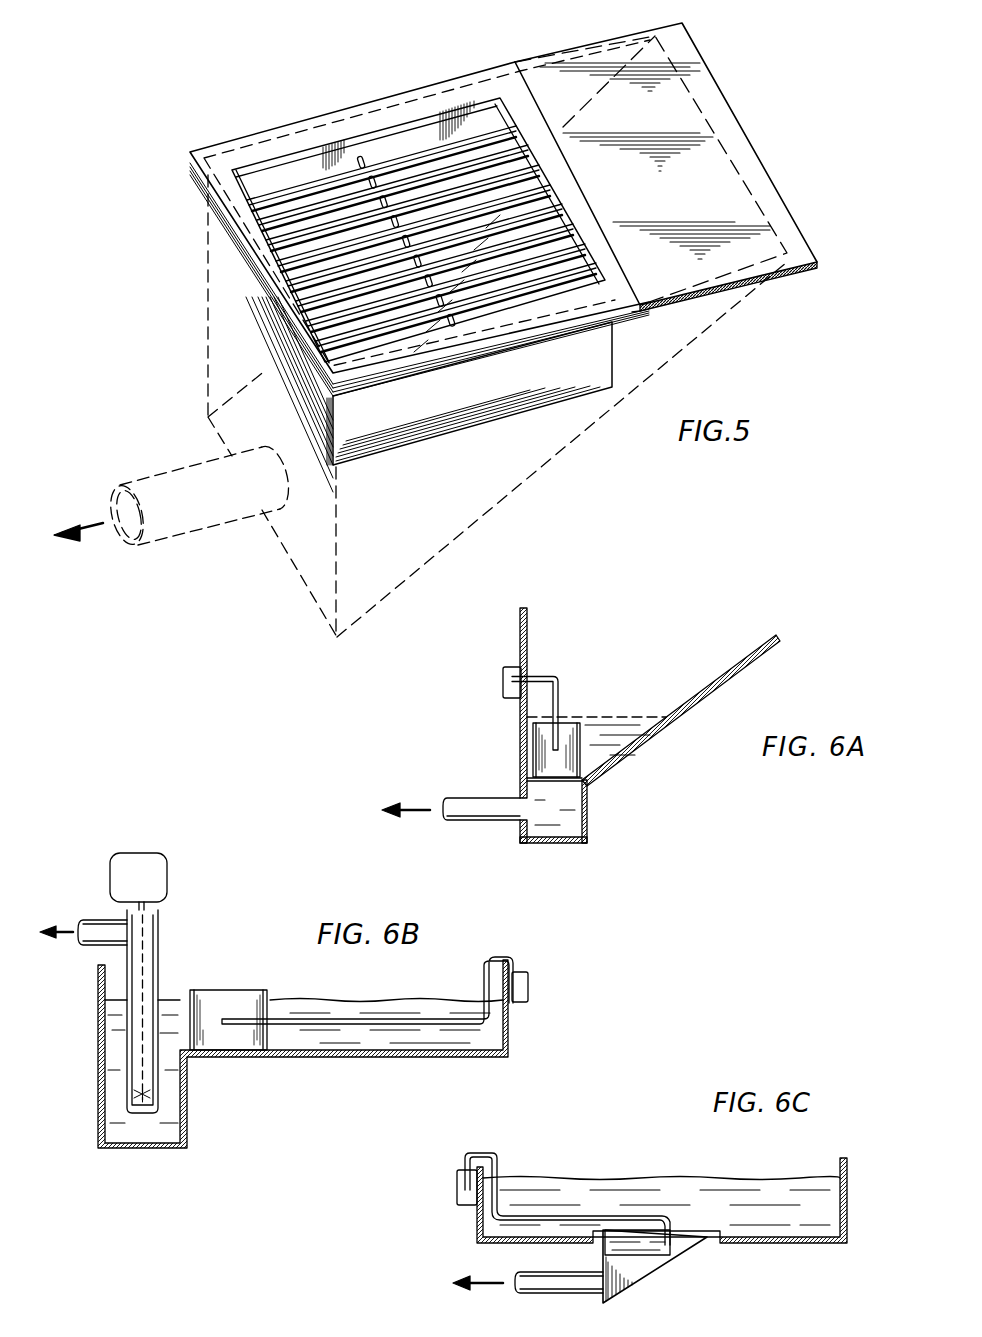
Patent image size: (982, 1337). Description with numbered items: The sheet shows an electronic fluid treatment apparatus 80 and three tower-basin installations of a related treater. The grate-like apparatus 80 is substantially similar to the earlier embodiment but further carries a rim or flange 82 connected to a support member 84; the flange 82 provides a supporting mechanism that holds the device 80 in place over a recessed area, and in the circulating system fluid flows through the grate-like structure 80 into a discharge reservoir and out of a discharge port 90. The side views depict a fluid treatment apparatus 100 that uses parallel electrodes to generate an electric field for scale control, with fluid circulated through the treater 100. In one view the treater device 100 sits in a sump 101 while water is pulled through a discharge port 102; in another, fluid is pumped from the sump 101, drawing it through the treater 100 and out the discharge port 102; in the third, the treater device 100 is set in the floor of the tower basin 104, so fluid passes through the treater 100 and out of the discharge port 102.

In FIG. 5, the fluid treatment apparatus 80 is at (312, 103).
In FIG. 5, the rim or flange 82 is at (190, 151).
In FIG. 5, the support member 84 is at (265, 320).
In FIG. 5, the discharge port 90 is at (197, 522).
In FIG. 6A, the fluid treatment apparatus (treater) 100 is at (574, 716).
In FIG. 6B, the fluid treatment apparatus (treater) 100 is at (235, 983).
In FIG. 6C, the fluid treatment apparatus (treater) 100 is at (680, 1247).
In FIG. 6B, the sump 101 is at (190, 1124).
In FIG. 6C, the sump 101 is at (636, 1296).
In FIG. 6A, the discharge port 102 is at (468, 803).
In FIG. 6B, the discharge port 102 is at (98, 922).
In FIG. 6C, the discharge port 102 is at (523, 1296).
In FIG. 6A, the tower basin 104 is at (553, 788).
In FIG. 6B, the tower basin 104 is at (352, 1060).
In FIG. 6C, the tower basin 104 is at (855, 1179).